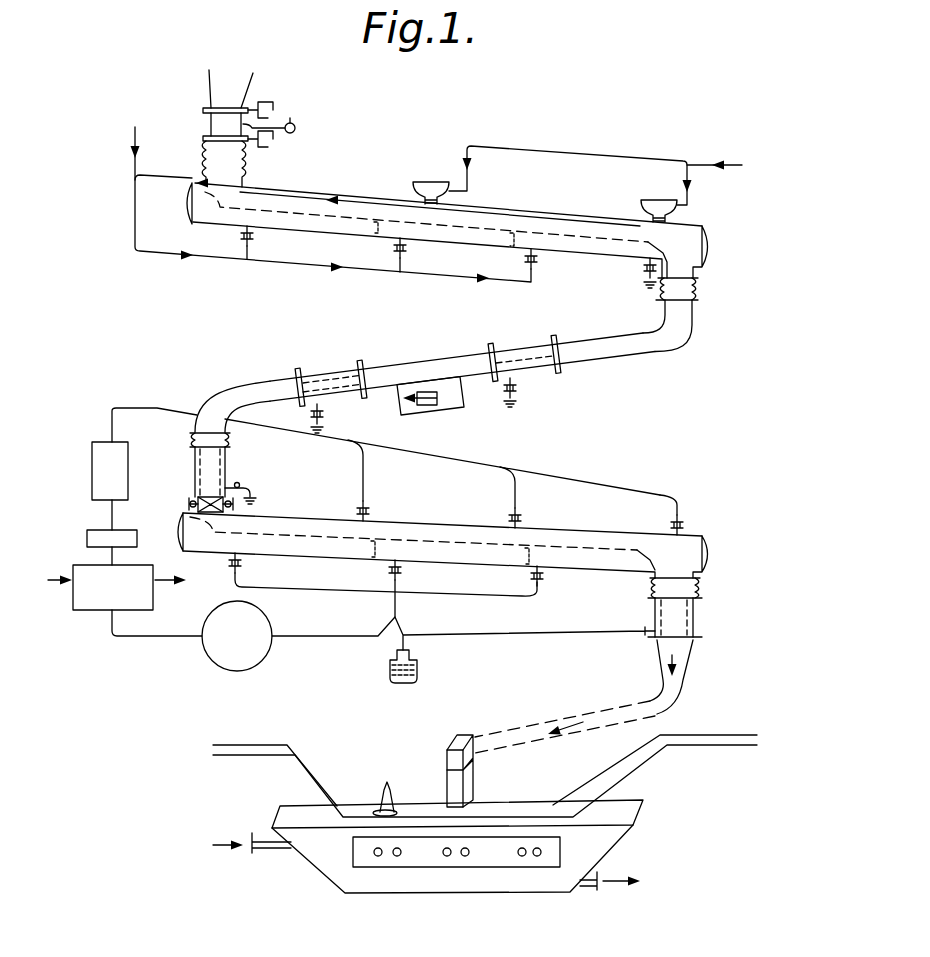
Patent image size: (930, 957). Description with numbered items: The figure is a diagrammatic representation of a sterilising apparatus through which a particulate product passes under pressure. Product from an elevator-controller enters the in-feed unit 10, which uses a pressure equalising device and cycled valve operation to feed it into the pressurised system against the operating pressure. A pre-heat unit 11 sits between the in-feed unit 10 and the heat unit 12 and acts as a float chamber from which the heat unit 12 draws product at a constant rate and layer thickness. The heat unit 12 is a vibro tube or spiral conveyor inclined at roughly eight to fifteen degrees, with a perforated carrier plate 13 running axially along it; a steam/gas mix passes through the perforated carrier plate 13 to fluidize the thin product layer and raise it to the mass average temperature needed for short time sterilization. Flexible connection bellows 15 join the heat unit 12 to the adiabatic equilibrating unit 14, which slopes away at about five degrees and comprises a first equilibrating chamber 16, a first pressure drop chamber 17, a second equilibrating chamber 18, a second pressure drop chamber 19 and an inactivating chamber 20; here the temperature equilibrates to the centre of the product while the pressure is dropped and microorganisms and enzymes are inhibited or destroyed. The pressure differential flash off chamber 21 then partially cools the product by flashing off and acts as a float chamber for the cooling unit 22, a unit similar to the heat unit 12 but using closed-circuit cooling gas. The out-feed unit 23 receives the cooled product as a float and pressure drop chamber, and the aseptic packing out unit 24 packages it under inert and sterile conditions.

The in-feed unit 10 is at (220, 128).
The pre-heat unit 11 is at (218, 157).
The heat unit 12 is at (367, 184).
The perforated carrier plate 13 is at (303, 209).
The adiabatic equilibrating unit 14 is at (432, 351).
The flexible connection bellows 15 is at (698, 289).
The first equilibrating chamber 16 is at (599, 337).
The first pressure drop chamber 17 is at (527, 344).
The second equilibrating chamber 18 is at (446, 360).
The second pressure drop chamber 19 is at (334, 369).
The inactivating chamber 20 is at (248, 392).
The pressure differential flash off chamber 21 is at (207, 463).
The cooling unit 22 is at (414, 515).
The out-feed unit 23 is at (682, 619).
The aseptic packing out unit 24 is at (440, 832).